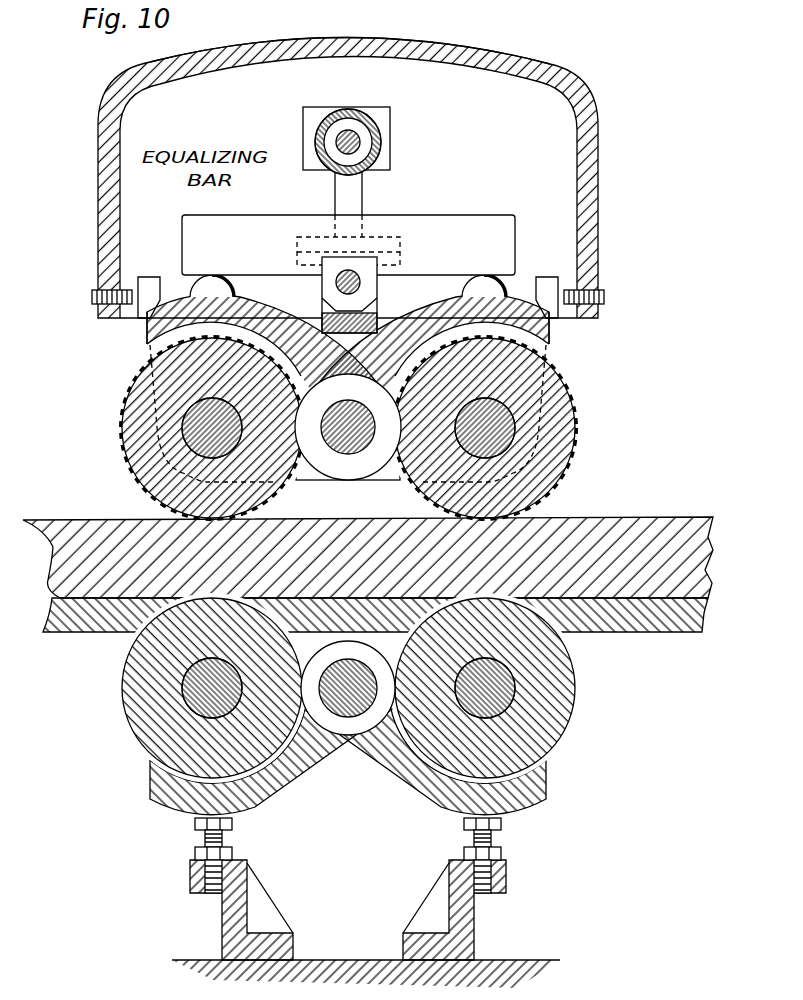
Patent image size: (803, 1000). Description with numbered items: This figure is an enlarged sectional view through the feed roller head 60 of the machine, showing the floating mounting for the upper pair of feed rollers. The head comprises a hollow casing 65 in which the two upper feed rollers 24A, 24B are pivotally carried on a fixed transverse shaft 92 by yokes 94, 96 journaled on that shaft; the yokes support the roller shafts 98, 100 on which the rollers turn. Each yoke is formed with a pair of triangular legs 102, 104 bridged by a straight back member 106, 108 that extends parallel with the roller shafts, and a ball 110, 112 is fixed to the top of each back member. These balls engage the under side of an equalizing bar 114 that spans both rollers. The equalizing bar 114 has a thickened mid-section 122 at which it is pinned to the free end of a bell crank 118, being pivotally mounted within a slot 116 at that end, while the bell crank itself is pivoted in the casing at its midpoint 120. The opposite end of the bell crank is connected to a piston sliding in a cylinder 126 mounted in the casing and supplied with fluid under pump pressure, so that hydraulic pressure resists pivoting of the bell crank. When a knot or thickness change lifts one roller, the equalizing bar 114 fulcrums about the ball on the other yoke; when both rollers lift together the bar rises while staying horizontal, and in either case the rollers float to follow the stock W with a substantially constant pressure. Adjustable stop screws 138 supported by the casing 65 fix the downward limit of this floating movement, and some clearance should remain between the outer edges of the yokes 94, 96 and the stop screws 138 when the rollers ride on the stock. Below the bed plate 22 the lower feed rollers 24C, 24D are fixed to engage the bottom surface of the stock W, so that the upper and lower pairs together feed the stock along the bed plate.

The feed roller head 60 is at (603, 197).
The hollow casing 65 is at (424, 44).
The stop screws 138 is at (109, 295).
The back member 108 is at (270, 313).
The back member 106 is at (452, 319).
The ball 112 is at (226, 288).
The ball 110 is at (488, 285).
The yoke 96 is at (140, 337).
The yoke 94 is at (556, 339).
The triangular leg 104 is at (153, 350).
The triangular leg 102 is at (549, 353).
The feed roller 24B is at (196, 428).
The feed roller 24A is at (510, 428).
The roller shaft 100 is at (231, 408).
The roller shaft 98 is at (500, 408).
The fixed shaft 92 is at (356, 406).
The equalizing bar 114 is at (270, 222).
The midpoint 120 is at (400, 262).
The bell crank 118 is at (360, 200).
The cylinder 126 is at (392, 146).
The thickened mid-section 122 is at (344, 295).
The slot 116 is at (371, 313).
The stock W is at (672, 516).
The bed plate 22 is at (50, 598).
The feed roller 24C is at (130, 726).
The feed roller 24D is at (573, 722).